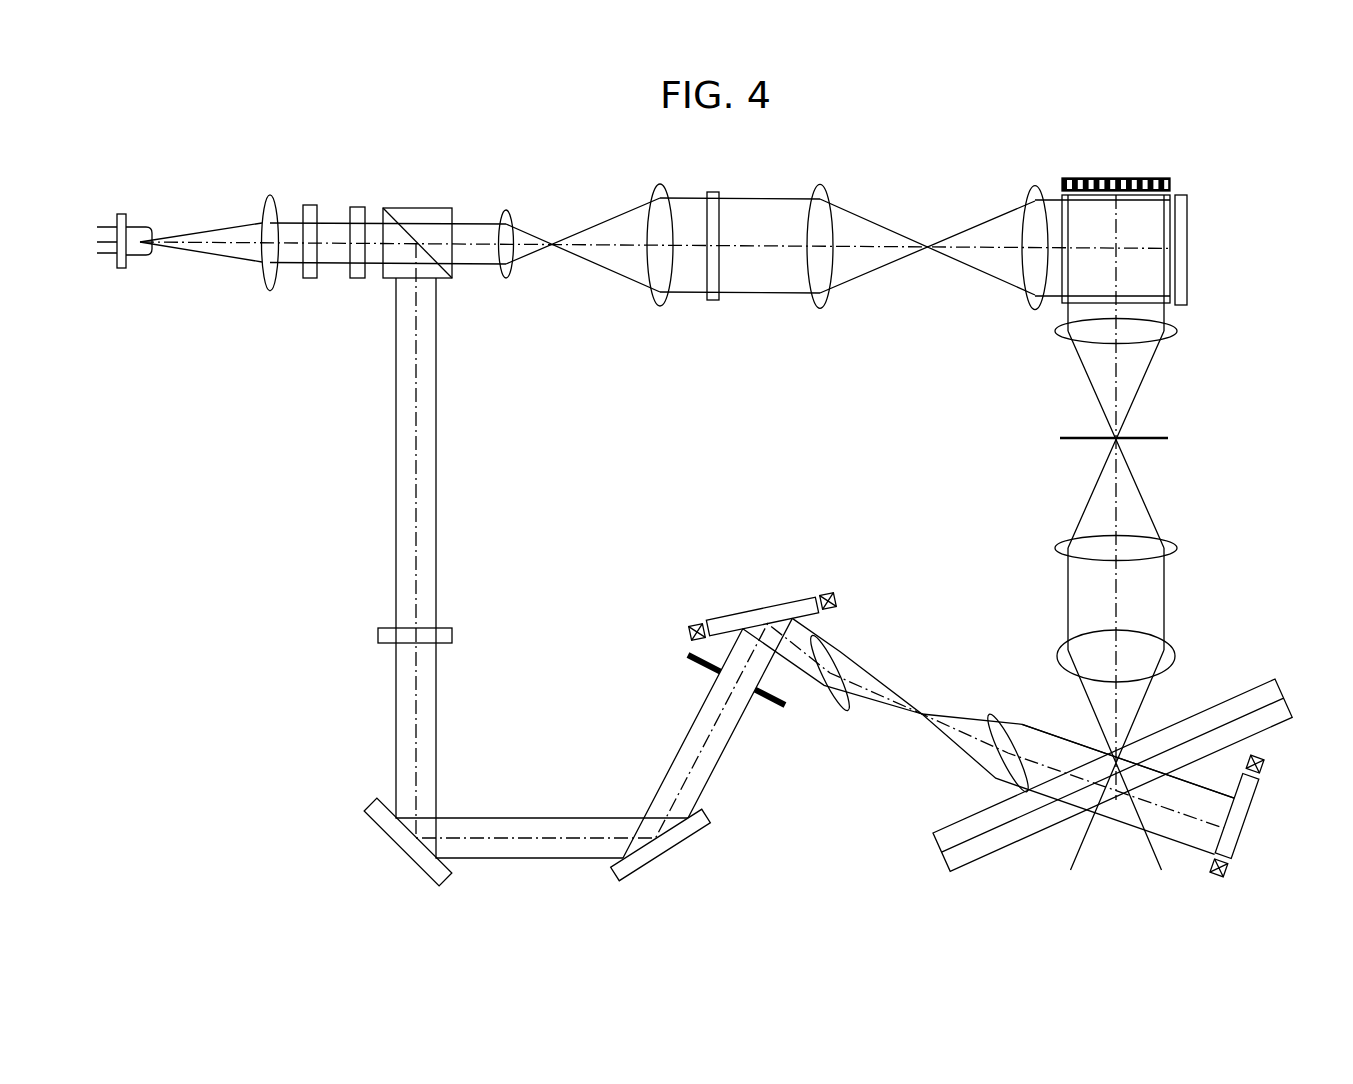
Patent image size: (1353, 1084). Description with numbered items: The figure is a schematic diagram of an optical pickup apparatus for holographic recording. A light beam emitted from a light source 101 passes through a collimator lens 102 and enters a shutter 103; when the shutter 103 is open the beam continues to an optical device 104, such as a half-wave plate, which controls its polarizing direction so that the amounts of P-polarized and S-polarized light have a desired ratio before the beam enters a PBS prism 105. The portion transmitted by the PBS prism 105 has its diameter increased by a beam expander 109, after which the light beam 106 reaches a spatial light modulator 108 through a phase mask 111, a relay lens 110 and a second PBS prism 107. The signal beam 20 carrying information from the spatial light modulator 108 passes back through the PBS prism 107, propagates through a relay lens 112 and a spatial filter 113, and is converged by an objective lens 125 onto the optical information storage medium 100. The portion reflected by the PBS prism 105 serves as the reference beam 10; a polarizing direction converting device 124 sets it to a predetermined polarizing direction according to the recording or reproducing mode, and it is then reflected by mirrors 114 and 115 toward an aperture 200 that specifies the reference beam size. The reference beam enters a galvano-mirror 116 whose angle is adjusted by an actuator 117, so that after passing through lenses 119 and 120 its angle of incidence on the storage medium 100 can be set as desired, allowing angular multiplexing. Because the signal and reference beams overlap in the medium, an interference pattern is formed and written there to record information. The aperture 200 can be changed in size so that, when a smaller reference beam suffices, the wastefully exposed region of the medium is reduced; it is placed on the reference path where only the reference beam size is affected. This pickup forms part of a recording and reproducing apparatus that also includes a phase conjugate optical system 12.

The light source 101 is at (139, 215).
The collimator lens 102 is at (270, 196).
The shutter 103 is at (310, 280).
The optical device 104 is at (356, 207).
The PBS prism 105 is at (427, 210).
The light beam 106 is at (756, 203).
The PBS prism 107 is at (1150, 217).
The spatial light modulator 108 is at (1120, 178).
The beam expander 109 is at (586, 212).
The relay lens 110 is at (932, 216).
The phase mask 111 is at (713, 300).
The relay lens 112 is at (1073, 440).
The spatial filter 113 is at (1168, 438).
The mirror 114 is at (400, 847).
The mirror 115 is at (662, 847).
The galvano-mirror 116 is at (762, 609).
The actuator 117 is at (837, 602).
The lens 119 is at (818, 713).
The lens 120 is at (1020, 718).
The polarizing direction converting device 124 is at (378, 636).
The objective lens 125 is at (1168, 658).
The aperture 200 is at (688, 656).
The reference beam 10 is at (1057, 752).
The signal beam 20 is at (1133, 700).
The optical information storage medium 100 is at (933, 852).
The phase conjugate optical system 12 is at (1266, 825).